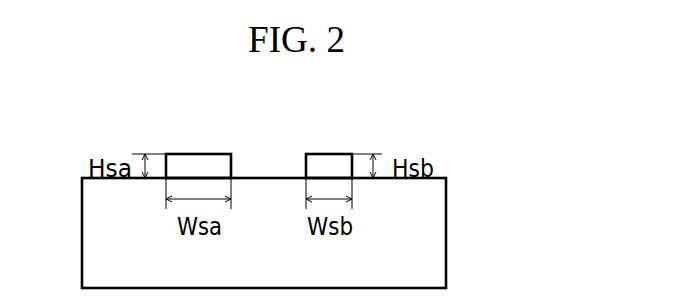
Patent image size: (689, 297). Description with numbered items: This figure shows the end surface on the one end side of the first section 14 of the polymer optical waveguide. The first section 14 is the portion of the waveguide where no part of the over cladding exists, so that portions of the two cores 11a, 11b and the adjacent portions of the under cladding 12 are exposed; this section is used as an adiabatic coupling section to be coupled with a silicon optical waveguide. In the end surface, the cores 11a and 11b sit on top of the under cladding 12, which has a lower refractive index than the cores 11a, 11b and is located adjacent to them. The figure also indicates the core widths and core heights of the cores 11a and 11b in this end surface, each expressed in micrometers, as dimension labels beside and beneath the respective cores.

The under cladding 12 is at (427, 219).
The core 11a is at (195, 153).
The core 11b is at (328, 153).
The first section 14 is at (441, 148).